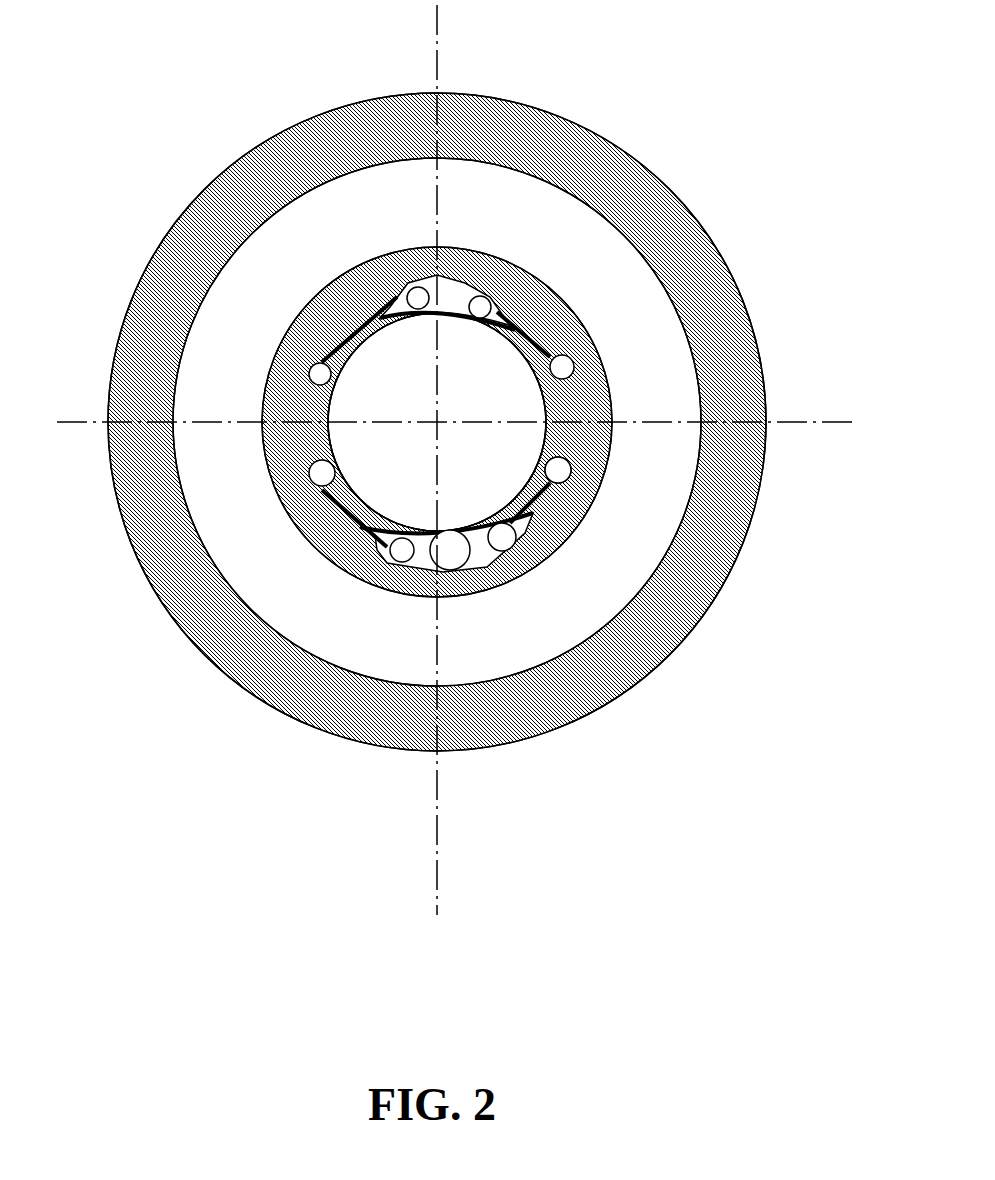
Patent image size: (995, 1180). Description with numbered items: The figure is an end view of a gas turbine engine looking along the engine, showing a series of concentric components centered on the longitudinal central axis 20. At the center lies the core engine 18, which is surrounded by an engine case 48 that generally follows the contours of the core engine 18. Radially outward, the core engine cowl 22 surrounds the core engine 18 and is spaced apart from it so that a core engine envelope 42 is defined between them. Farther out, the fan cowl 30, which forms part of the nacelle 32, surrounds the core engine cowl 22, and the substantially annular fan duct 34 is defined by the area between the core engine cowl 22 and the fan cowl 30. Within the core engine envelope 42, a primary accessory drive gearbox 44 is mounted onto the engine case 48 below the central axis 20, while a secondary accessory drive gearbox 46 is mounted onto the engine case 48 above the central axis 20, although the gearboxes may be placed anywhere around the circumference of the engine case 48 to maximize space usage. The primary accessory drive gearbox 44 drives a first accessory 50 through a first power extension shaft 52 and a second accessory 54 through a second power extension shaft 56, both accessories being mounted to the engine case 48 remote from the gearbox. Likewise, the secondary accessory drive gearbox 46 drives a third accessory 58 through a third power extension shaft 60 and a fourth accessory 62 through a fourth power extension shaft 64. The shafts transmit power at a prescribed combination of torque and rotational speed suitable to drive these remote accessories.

The core engine 18 is at (390, 403).
The longitudinal central axis 20 is at (800, 422).
The core engine cowl 22 is at (560, 469).
The fan cowl 30 is at (190, 522).
The nacelle 32 is at (112, 485).
The fan duct 34 is at (661, 330).
The core engine envelope 42 is at (585, 414).
The primary accessory drive gearbox 44 is at (483, 558).
The secondary accessory drive gearbox 46 is at (455, 293).
The engine case 48 is at (327, 438).
The first accessory 50 is at (307, 485).
The first power extension shaft 52 is at (362, 532).
The second accessory 54 is at (568, 479).
The second power extension shaft 56 is at (530, 507).
The third accessory 58 is at (310, 363).
The third power extension shaft 60 is at (352, 335).
The fourth accessory 62 is at (566, 360).
The fourth power extension shaft 64 is at (523, 327).